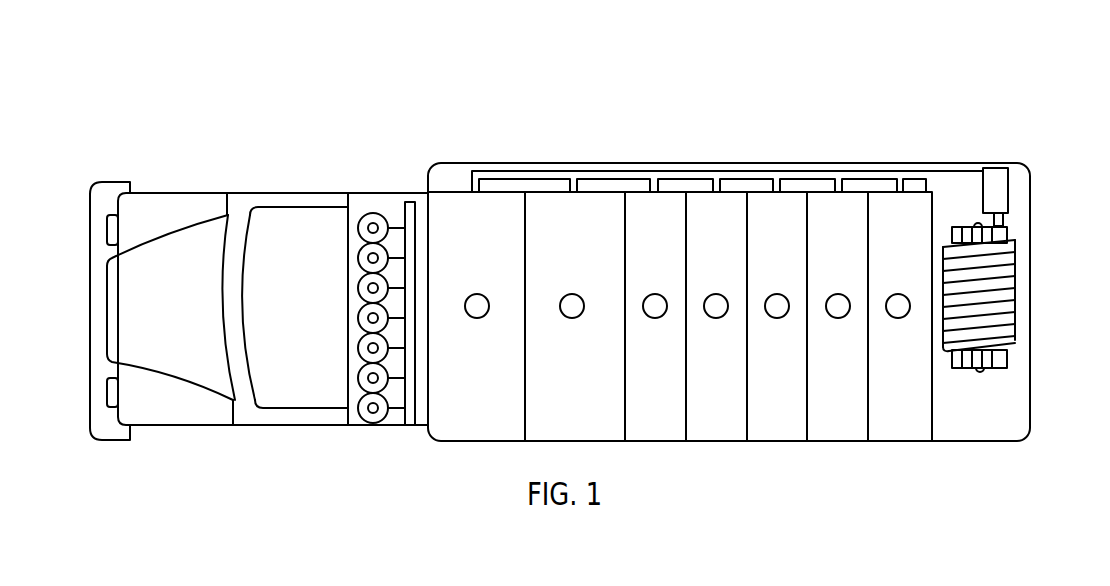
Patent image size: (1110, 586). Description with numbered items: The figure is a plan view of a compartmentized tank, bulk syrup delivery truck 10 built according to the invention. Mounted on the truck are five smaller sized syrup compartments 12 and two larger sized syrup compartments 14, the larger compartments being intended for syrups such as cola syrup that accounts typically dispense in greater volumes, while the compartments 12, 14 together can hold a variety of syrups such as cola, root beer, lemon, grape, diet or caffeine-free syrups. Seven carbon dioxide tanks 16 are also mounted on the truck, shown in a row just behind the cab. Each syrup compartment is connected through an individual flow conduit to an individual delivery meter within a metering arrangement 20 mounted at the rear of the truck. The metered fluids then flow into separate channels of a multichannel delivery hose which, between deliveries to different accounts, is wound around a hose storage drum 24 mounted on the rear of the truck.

The bulk syrup delivery truck 10 is at (131, 106).
The smaller sized syrup compartments 12 is at (668, 200).
The larger sized syrup compartments 14 is at (450, 205).
The carbon dioxide tanks 16 is at (365, 213).
The metering arrangement 20 is at (998, 168).
The hose storage drum 24 is at (1012, 243).